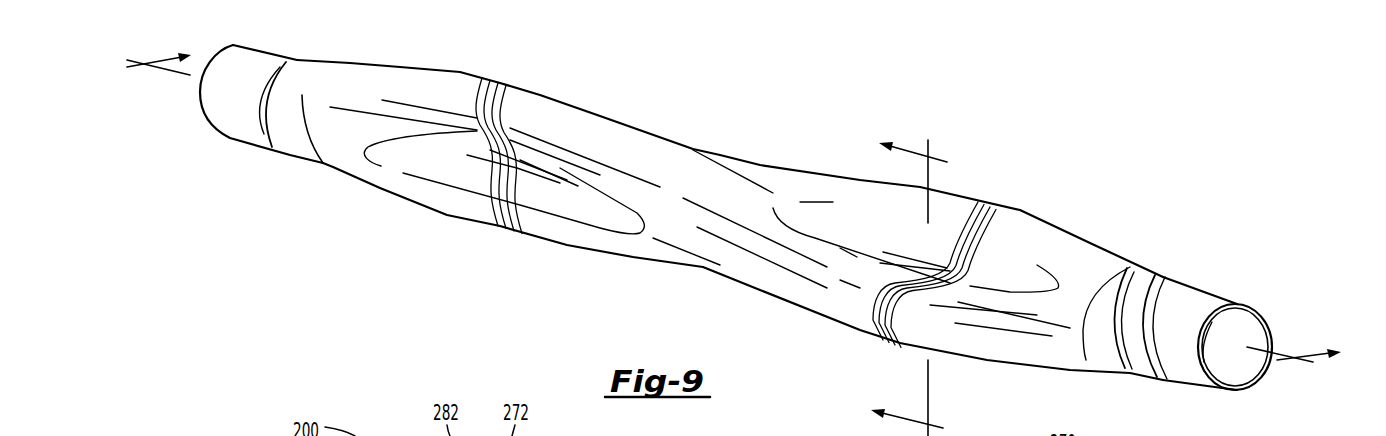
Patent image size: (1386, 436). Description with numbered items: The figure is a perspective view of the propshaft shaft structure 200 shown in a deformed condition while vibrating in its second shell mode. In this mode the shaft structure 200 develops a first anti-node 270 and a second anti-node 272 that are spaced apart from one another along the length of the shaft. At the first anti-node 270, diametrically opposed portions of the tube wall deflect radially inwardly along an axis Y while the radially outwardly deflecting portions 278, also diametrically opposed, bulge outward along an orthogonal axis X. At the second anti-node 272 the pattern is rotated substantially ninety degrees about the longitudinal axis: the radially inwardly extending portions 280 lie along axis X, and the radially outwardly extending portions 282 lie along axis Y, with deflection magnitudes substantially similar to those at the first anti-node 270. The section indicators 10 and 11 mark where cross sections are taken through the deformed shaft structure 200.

The section line 10- 10 is at (743, 191).
The section line 11- 11 is at (927, 288).
The shaft structure 200 is at (673, 129).
The first anti-node 270 is at (1015, 208).
The second anti-node 272 is at (528, 90).
The radially outwardly deflecting portions 278 is at (830, 308).
The radially inwardly extending portions 280 is at (490, 162).
The radially outwardly extending portions 282 is at (453, 87).